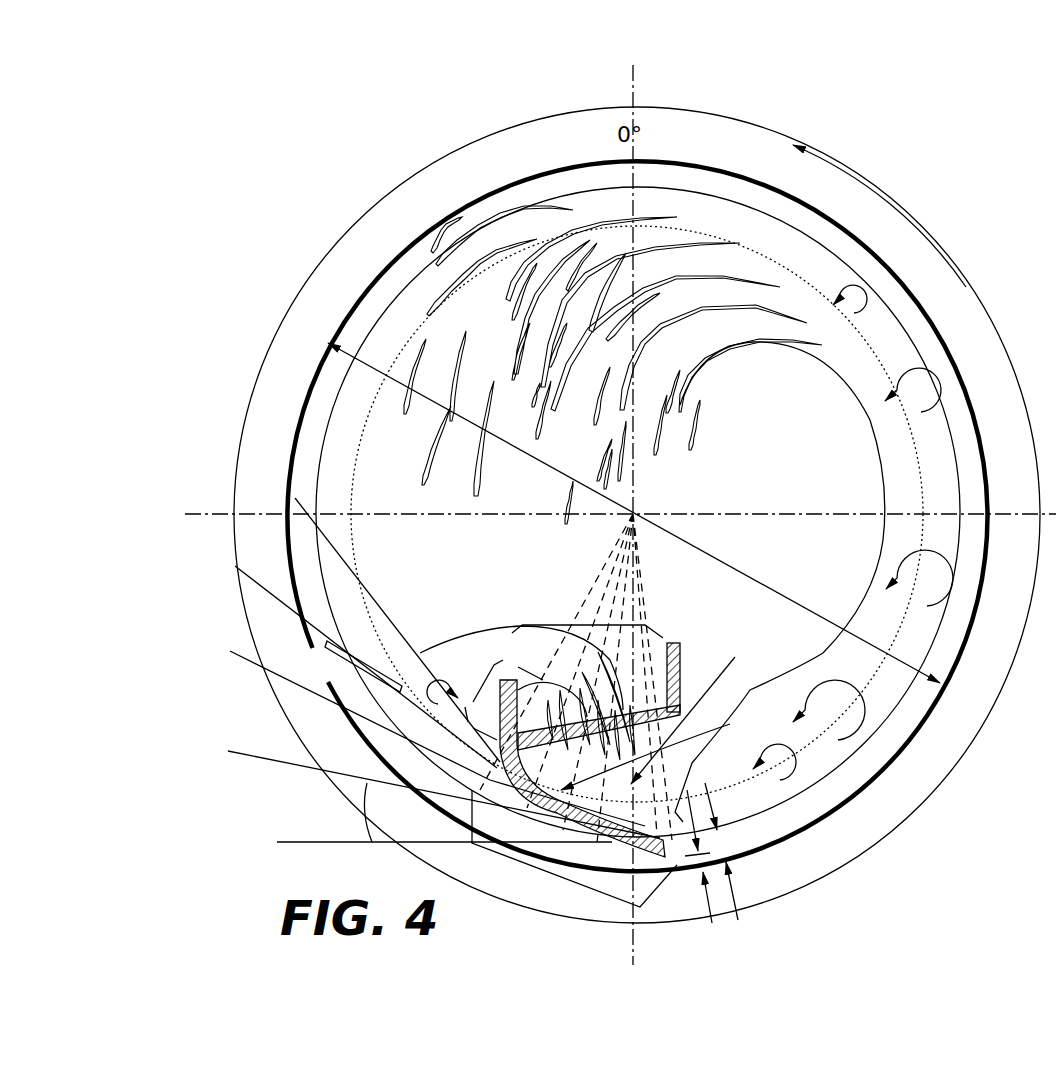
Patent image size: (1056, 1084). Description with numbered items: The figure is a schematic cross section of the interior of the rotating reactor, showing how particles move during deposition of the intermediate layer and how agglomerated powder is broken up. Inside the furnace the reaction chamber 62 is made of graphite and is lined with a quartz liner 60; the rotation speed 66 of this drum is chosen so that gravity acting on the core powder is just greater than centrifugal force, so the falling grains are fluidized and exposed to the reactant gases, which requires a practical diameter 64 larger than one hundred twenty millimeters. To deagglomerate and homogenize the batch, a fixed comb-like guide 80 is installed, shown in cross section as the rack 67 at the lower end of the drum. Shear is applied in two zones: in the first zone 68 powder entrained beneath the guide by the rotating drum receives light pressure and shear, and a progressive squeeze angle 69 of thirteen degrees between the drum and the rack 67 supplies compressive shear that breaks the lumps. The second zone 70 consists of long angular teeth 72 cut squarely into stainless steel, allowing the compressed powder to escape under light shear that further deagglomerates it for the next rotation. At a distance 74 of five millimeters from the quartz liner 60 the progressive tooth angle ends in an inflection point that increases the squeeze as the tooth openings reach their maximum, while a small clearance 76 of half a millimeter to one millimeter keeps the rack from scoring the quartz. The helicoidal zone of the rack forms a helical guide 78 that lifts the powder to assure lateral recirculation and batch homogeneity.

The quartz liner 60 is at (374, 271).
The reaction chamber 62 is at (368, 202).
The diameter 64 is at (634, 513).
The rotation speed 66 is at (879, 216).
The rack 67 is at (508, 678).
The first zone 68 is at (452, 779).
The progressive squeeze angle 69 is at (351, 741).
The second zone 70 is at (696, 708).
The teeth 72 is at (652, 742).
The distance 74 is at (723, 868).
The clearance 76 is at (711, 870).
The helical guide 78 is at (476, 688).
The comb-like guide 80 is at (576, 678).